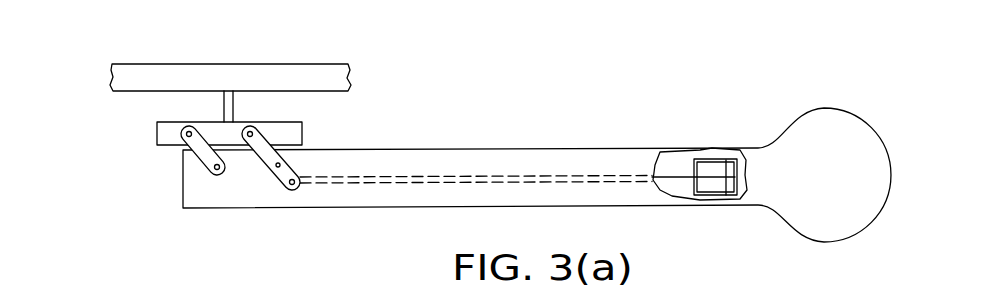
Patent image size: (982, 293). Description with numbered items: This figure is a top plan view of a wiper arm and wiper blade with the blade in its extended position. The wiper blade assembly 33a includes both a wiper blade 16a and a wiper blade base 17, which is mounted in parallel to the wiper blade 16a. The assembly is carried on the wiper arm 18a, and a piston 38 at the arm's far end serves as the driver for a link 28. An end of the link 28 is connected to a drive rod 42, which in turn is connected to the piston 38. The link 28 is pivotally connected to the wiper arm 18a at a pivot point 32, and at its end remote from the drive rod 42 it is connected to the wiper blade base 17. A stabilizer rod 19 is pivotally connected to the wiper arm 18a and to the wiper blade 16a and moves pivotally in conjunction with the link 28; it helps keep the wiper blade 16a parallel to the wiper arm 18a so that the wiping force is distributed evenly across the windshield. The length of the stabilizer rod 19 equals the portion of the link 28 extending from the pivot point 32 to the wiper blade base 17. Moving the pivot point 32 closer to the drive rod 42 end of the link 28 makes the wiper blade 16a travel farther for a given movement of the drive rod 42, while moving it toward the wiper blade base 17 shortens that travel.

The wiper blade 16a is at (162, 73).
The wiper blade base 17 is at (163, 136).
The wiper arm 18a is at (637, 147).
The stabilizer rod 19 is at (187, 148).
The link 28 is at (274, 141).
The pivot point 32 is at (277, 168).
The wiper blade assembly 33a is at (112, 115).
The piston 38 is at (733, 159).
The drive rod 42 is at (522, 178).